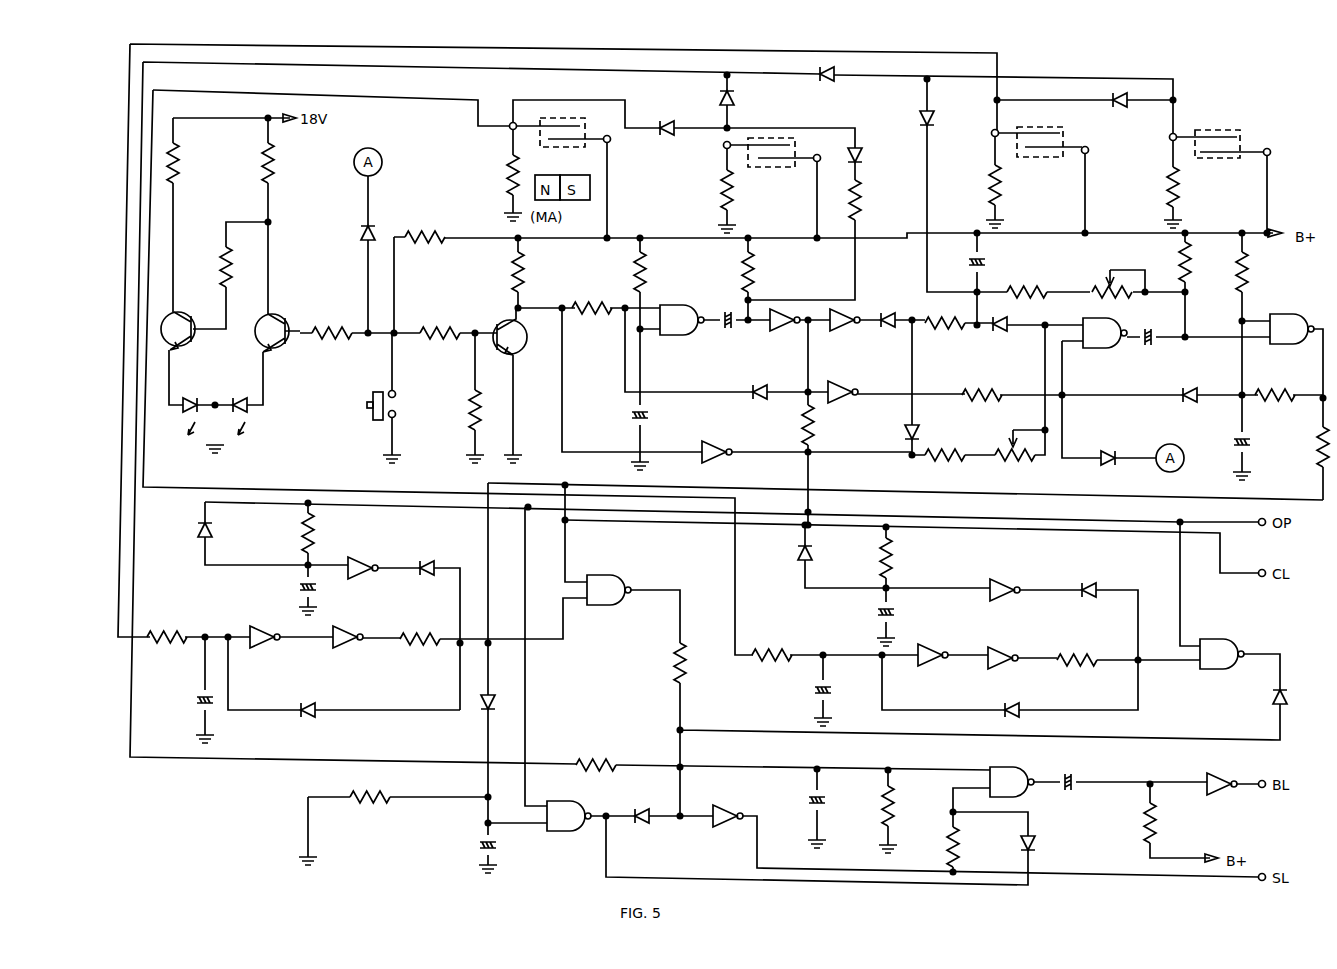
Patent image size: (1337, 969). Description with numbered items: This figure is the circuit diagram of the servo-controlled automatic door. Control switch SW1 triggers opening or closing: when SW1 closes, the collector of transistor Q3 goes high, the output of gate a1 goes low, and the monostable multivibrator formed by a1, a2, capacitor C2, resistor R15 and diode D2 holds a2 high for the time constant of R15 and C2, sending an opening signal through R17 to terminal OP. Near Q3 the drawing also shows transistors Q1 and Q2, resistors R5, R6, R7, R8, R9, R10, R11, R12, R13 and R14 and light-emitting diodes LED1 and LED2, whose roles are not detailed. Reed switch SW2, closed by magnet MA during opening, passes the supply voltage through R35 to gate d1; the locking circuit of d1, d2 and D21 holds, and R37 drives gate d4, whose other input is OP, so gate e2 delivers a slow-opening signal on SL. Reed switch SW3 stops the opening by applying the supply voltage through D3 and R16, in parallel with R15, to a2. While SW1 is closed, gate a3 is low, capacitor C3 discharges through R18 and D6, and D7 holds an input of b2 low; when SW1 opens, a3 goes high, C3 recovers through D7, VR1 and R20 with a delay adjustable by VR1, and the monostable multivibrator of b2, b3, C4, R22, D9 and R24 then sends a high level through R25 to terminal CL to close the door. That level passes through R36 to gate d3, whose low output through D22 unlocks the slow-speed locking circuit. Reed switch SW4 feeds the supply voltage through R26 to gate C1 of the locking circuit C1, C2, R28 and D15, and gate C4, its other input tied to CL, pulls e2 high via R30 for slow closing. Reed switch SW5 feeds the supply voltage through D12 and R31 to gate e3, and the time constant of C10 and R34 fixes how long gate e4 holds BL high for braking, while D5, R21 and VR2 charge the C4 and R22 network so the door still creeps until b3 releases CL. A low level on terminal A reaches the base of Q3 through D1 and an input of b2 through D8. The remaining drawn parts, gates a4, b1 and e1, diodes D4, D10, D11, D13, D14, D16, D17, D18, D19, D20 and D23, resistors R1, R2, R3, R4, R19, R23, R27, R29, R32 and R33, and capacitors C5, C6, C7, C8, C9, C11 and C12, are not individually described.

The resistor R5 is at (184, 163).
The resistor R7 is at (279, 163).
The resistor R6 is at (217, 267).
The transistor Q1 is at (188, 333).
The transistor Q2 is at (277, 340).
The transistor Q3 is at (521, 381).
The light emitting diode LED1 is at (186, 413).
The light emitting diode LED2 is at (239, 414).
The diode D1 is at (353, 234).
The resistor R8 is at (332, 325).
The resistor R9 is at (425, 229).
The resistor R10 is at (440, 325).
The control switch SW1 is at (372, 394).
The resistor R11 is at (460, 394).
The resistor R1 is at (501, 168).
The reed switch SW2 is at (563, 178).
The resistor R12 is at (533, 272).
The resistor R13 is at (592, 299).
The resistor R14 is at (655, 272).
The resistor R15 is at (763, 272).
The diode D10 is at (665, 117).
The diode D11 is at (744, 101).
The diode D12 is at (827, 85).
The resistor R2 is at (713, 184).
The reed switch SW3 is at (776, 188).
The diode D3 is at (868, 152).
The resistor R16 is at (870, 200).
The diode D5 is at (939, 119).
The resistor R3 is at (979, 175).
The reed switch SW4 is at (1043, 170).
The diode D13 is at (1085, 110).
The resistor R4 is at (1183, 177).
The reed switch SW5 is at (1223, 171).
The capacitor C3 is at (666, 425).
The resistor R21 is at (1027, 283).
The variable resistor VR2 is at (1112, 273).
The resistor R22 is at (1177, 262).
The resistor R23 is at (1234, 276).
The IC gate a1 is at (682, 329).
The capacitor C2 is at (533, 489).
The IC gate a2 is at (785, 331).
The inverter a4 is at (845, 331).
The diode D4 is at (888, 310).
The resistor R18 is at (945, 314).
The diode D7 is at (1004, 334).
The IC gate b2 is at (1105, 346).
The capacitor C4 is at (873, 467).
The IC gate b3 is at (1292, 321).
The diode D2 is at (758, 383).
The inverter b1 is at (843, 399).
The resistor R17 is at (799, 425).
The diode D6 is at (923, 430).
The resistor R19 is at (982, 386).
The diode D8 is at (1106, 449).
The diode D9 is at (1193, 386).
The resistor R24 is at (1275, 387).
The capacitor C5 is at (1227, 443).
The resistor R25 is at (1314, 447).
The resistor R20 is at (945, 464).
The variable resistor VR1 is at (1015, 465).
The IC gate a3 is at (717, 462).
The IC gate c1 C1 is at (449, 537).
The diode D14 is at (221, 531).
The resistor R27 is at (323, 533).
The capacitor C6 is at (293, 588).
The diode D17 is at (435, 559).
The resistor R26 is at (167, 628).
The capacitor C7 is at (190, 701).
The resistor R28 is at (420, 631).
The diode D15 is at (312, 719).
The diode D16 is at (502, 693).
The resistor R30 is at (663, 663).
The resistor R29 is at (370, 788).
The capacitor C8 is at (472, 847).
The NAND gate e1 is at (569, 828).
The diode D18 is at (639, 829).
The IC gate e2 is at (728, 827).
The resistor R31 is at (596, 756).
The capacitor C9 is at (803, 801).
The resistor R32 is at (879, 806).
The IC gate e3 is at (1012, 773).
The capacitor C10 is at (1071, 774).
The IC gate e4 is at (1222, 777).
The resistor R33 is at (944, 847).
The diode D19 is at (1044, 844).
The resistor R34 is at (1132, 823).
The diode D20 is at (789, 554).
The resistor R36 is at (901, 558).
The capacitor C12 is at (901, 613).
The resistor R35 is at (772, 646).
The capacitor C11 is at (838, 691).
The IC gate d1 is at (933, 666).
The IC gate d2 is at (1003, 668).
The resistor R37 is at (1077, 651).
The diode D21 is at (1029, 717).
The IC gate d3 is at (1005, 581).
The diode D22 is at (1097, 581).
The IC gate d4 is at (1222, 666).
The diode D23 is at (1296, 698).